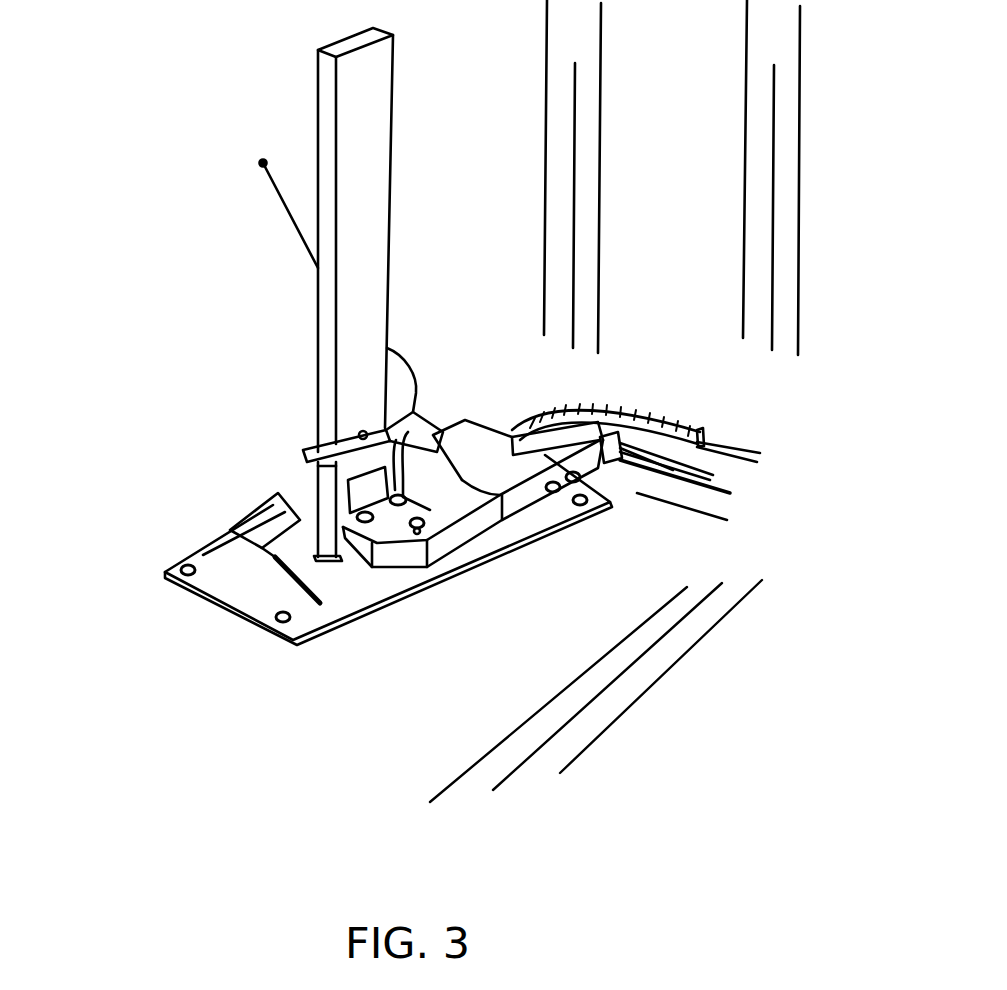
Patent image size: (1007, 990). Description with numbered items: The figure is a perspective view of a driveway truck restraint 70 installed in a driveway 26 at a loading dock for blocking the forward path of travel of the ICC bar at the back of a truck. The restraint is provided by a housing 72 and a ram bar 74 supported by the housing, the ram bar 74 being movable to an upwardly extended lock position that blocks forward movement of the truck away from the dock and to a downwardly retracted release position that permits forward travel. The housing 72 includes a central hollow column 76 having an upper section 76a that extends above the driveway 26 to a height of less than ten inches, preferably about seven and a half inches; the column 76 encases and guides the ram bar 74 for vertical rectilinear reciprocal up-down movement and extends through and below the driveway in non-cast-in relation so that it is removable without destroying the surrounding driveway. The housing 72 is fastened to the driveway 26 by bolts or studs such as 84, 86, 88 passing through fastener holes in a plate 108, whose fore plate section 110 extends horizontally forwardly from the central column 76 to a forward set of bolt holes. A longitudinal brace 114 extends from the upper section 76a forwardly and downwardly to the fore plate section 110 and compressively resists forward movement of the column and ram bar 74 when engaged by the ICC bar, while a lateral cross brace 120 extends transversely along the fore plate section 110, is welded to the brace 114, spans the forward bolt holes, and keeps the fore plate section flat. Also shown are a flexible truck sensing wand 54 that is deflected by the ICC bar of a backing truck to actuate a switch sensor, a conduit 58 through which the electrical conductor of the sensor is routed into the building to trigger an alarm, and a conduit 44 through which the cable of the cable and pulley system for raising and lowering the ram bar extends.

The driveway 26 is at (757, 712).
The conduit 44 is at (712, 488).
The flexible truck sensing wand 54 is at (417, 393).
The conduit 58 is at (733, 440).
The driveway truck restraint 70 is at (198, 478).
The housing 72 is at (303, 458).
The ram bar 74 is at (352, 308).
The central hollow column 76 is at (300, 508).
The upper section 76a is at (313, 468).
The bolt 84 is at (182, 587).
The bolt 86 is at (280, 627).
The bolt 88 is at (591, 513).
The plate 108 is at (420, 590).
The fore plate section 110 is at (233, 593).
The brace 114 is at (270, 507).
The lateral cross brace 120 is at (273, 560).